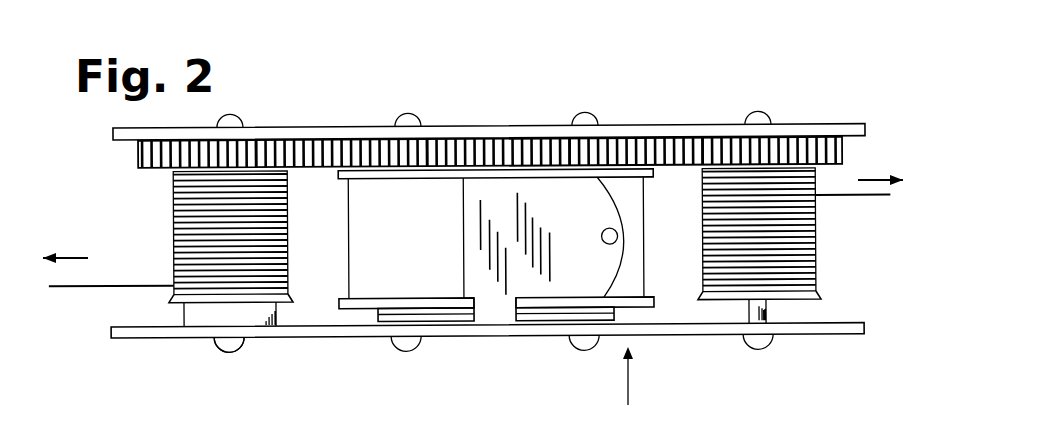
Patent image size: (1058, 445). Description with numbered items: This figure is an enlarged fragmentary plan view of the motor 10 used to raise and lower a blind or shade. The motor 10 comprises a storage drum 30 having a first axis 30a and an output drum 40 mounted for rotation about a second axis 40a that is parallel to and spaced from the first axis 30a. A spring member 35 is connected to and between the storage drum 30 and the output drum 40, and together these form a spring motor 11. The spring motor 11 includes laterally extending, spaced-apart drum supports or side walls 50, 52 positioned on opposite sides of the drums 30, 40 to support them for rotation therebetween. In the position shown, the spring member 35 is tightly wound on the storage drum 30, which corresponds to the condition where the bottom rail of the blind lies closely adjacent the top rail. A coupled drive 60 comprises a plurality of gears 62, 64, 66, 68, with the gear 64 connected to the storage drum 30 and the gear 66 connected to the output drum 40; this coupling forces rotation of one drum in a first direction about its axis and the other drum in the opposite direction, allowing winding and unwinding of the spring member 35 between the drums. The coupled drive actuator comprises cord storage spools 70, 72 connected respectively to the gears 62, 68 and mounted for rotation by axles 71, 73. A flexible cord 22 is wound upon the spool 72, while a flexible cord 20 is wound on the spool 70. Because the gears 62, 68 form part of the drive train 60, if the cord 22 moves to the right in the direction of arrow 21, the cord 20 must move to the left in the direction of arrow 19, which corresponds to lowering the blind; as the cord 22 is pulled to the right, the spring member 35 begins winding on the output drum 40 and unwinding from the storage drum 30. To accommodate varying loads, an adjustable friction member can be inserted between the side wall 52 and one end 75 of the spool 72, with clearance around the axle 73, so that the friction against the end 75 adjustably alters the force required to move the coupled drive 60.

The motor 10 is at (627, 388).
The spring motor 11 is at (483, 320).
The arrow 19 is at (88, 253).
The flexible cord 20 is at (120, 287).
The arrow 21 is at (882, 177).
The flexible cord 22 is at (825, 200).
The storage drum 30 is at (383, 127).
The first axis 30a is at (405, 352).
The spring member 35 is at (488, 205).
The output drum 40 is at (636, 190).
The second axis 40a is at (585, 353).
The drum support or side wall 50 is at (798, 128).
The drum support or side wall 52 is at (835, 334).
The coupled drive 60 is at (310, 186).
The gear 62 is at (262, 153).
The gear 64 is at (430, 150).
The gear 66 is at (567, 145).
The gear 68 is at (703, 125).
The cord storage spool 70 is at (173, 233).
The axle 71 is at (222, 343).
The cord storage spool 72 is at (815, 261).
The axle 73 is at (748, 311).
The end of spool 75 is at (815, 306).